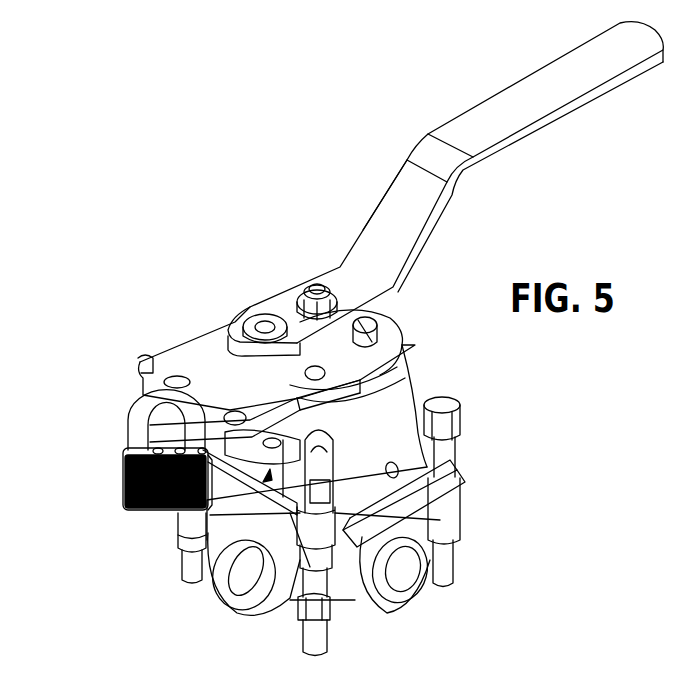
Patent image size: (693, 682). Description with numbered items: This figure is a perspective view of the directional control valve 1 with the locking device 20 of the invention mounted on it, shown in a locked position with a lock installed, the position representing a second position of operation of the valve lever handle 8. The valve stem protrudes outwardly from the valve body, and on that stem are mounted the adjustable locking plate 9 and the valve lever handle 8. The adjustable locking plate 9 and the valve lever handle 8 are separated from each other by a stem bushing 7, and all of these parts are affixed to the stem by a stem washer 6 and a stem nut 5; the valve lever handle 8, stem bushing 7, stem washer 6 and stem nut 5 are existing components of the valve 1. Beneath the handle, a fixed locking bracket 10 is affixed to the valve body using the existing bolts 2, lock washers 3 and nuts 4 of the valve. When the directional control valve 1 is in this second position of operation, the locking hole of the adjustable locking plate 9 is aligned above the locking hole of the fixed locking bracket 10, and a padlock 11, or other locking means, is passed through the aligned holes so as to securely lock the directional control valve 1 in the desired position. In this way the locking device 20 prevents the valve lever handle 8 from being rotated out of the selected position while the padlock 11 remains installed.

The directional control valve 1 is at (387, 438).
The bolts 2 is at (463, 487).
The lock washers 3 is at (330, 600).
The nuts 4 is at (323, 617).
The stem nut 5 is at (300, 288).
The stem washer 6 is at (293, 302).
The stem bushing 7 is at (335, 342).
The valve lever handle 8 is at (378, 230).
The adjustable locking plate 9 is at (213, 372).
The fixed locking bracket 10 is at (285, 472).
The padlock 11 is at (130, 430).
The locking device 20 is at (251, 418).